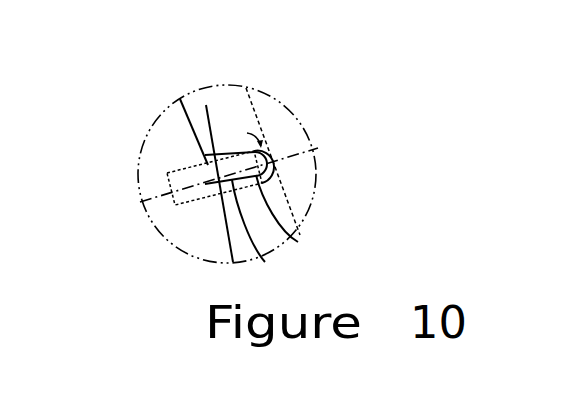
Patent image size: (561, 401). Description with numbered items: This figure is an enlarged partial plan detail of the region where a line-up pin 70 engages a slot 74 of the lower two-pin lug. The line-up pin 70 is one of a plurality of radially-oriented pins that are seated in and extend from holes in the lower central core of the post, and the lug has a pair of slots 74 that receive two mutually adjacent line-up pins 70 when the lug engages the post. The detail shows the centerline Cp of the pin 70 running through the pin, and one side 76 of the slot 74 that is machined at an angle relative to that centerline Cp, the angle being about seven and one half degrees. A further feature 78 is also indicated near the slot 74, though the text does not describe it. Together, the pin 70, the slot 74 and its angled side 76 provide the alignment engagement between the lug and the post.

The line-up pin 70 is at (190, 170).
The slot 74 is at (265, 262).
The side of slot 76 is at (206, 105).
The fiber 78 is at (298, 242).
The centerline of the pin Cp is at (295, 150).